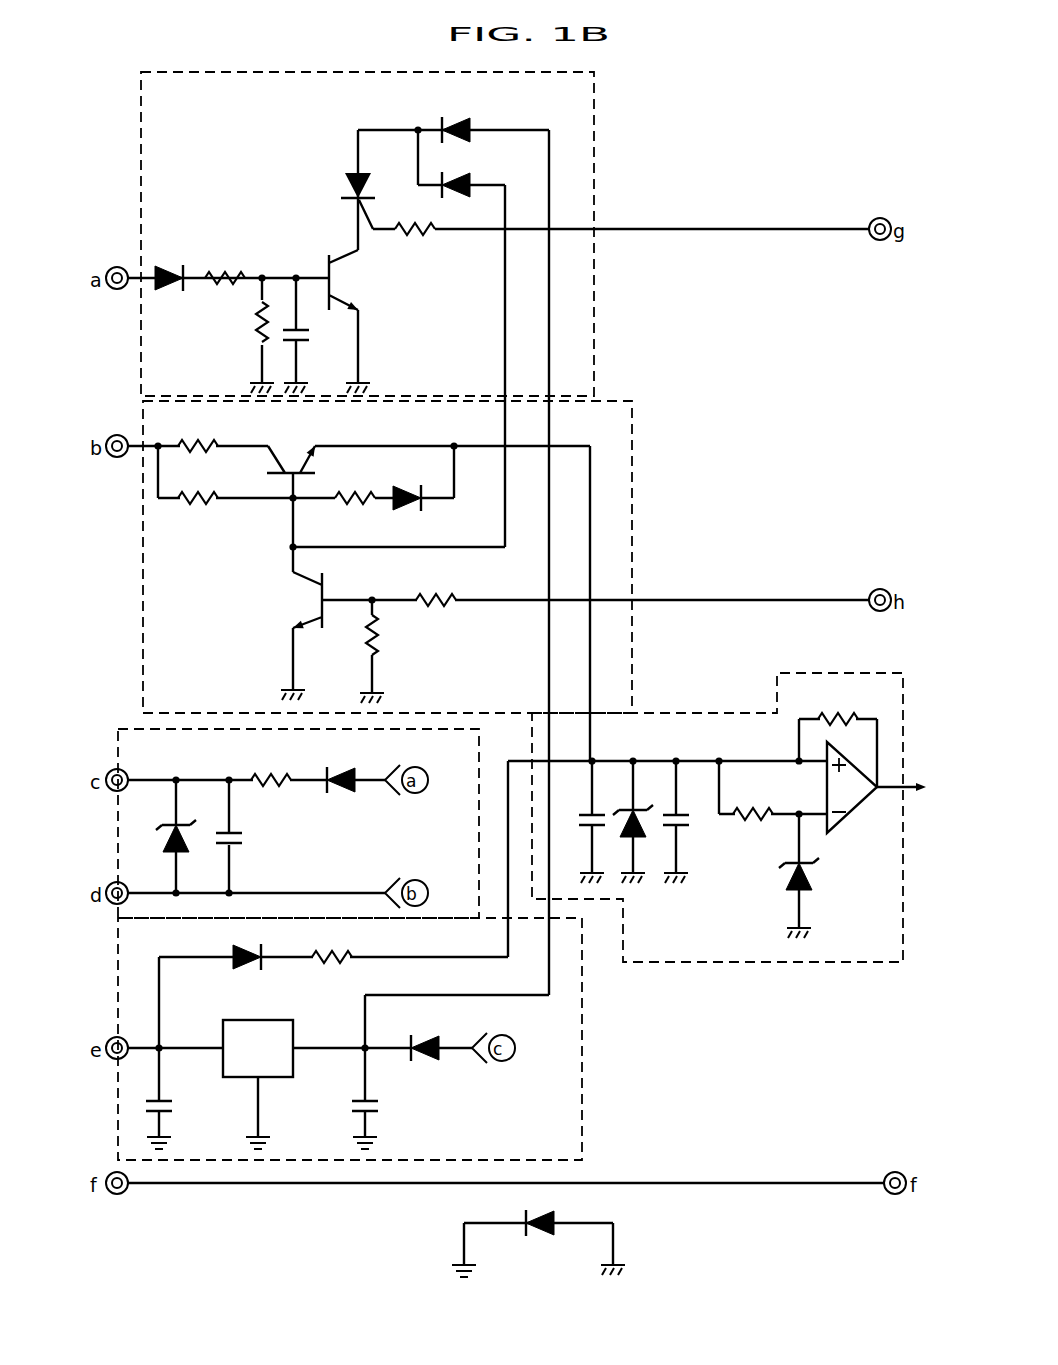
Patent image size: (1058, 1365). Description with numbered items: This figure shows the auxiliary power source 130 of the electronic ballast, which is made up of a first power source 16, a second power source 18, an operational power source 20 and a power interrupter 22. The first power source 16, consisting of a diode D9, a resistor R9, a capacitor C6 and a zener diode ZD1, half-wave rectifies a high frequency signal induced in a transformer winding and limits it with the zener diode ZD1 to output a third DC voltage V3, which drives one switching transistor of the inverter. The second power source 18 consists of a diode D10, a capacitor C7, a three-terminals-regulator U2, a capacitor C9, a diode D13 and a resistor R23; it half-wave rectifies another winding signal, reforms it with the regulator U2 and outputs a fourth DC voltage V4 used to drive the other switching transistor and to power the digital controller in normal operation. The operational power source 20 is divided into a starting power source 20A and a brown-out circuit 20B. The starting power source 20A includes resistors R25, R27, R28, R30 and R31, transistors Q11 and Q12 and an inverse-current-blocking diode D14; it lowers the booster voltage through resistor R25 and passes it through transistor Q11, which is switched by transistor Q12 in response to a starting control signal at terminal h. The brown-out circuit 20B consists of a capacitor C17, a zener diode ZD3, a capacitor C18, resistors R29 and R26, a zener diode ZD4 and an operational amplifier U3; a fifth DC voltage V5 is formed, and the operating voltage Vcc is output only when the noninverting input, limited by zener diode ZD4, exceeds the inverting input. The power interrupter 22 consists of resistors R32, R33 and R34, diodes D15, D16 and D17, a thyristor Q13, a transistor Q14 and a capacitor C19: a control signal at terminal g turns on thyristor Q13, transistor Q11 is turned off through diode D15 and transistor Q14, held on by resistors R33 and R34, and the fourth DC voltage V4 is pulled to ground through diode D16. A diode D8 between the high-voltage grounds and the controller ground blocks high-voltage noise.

The auxiliary power source 130 is at (754, 129).
The power interrupter 22 is at (595, 286).
The operational power source 20 is at (650, 692).
The starting power source 20A is at (510, 696).
The brown-out circuit 20B is at (737, 943).
The first power source 16 is at (132, 719).
The second power source 18 is at (583, 1066).
The diode D17 is at (167, 290).
The resistor R33 is at (221, 266).
The resistor R34 is at (235, 347).
The capacitor C19 is at (312, 361).
The transistor Q14 is at (366, 321).
The thyristor Q13 is at (329, 201).
The resistor R32 is at (411, 219).
The diode D16 is at (476, 125).
The diode D15 is at (476, 180).
The resistor R25 is at (195, 434).
The resistor R27 is at (195, 486).
The resistor R28 is at (350, 486).
The diode D14 is at (402, 510).
The transistor Q11 is at (290, 446).
The transistor Q12 is at (283, 636).
The resistor R31 is at (435, 589).
The resistor R30 is at (388, 659).
The third DC voltage V3 is at (178, 779).
The zener diode ZD1 is at (159, 825).
The capacitor C6 is at (242, 838).
The resistor R9 is at (271, 767).
The diode D9 is at (338, 766).
The fifth DC voltage V5 is at (593, 760).
The capacitor C17 is at (578, 849).
The zener diode ZD3 is at (642, 832).
The capacitor C18 is at (688, 849).
The resistor R29 is at (752, 803).
The resistor R26 is at (836, 708).
The zener diode ZD4 is at (821, 898).
The operational amplifier U3 is at (850, 820).
The operating voltage Vcc is at (920, 777).
The fourth DC voltage V4 is at (159, 1047).
The diode D13 is at (218, 949).
The resistor R23 is at (332, 945).
The three-terminals-regulator U2 is at (258, 1020).
The capacitor C9 is at (174, 1121).
The capacitor C7 is at (347, 1121).
The diode D10 is at (427, 1036).
The diode D8 is at (538, 1243).